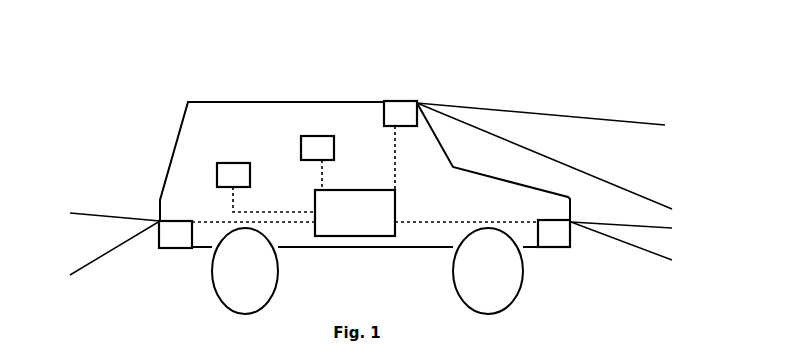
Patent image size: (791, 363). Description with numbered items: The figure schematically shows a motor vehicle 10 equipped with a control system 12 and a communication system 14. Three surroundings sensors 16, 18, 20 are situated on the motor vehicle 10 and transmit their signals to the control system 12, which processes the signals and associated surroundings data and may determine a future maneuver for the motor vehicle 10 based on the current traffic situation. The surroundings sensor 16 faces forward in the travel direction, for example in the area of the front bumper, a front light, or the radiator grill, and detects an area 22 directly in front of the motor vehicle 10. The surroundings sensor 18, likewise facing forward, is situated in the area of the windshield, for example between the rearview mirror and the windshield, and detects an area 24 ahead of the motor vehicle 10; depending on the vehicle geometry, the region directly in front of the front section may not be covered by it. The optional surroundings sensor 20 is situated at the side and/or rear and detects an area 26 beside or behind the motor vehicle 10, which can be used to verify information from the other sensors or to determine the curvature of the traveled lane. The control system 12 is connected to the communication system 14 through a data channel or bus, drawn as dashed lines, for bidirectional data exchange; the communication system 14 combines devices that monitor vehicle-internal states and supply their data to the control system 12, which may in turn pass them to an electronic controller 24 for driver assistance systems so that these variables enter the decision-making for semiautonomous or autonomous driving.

The motor vehicle 10 is at (365, 182).
The control system 12 is at (365, 181).
The communication system 14 is at (233, 175).
The surroundings sensor 16 is at (554, 233).
The surroundings sensor 18 is at (400, 113).
The surroundings sensor 20 is at (175, 234).
The area in front of the motor vehicle 22 is at (621, 241).
The electronic controller for driver assistance systems 24 is at (486, 156).
The area to the side of and/or behind the motor vehicle 26 is at (115, 244).